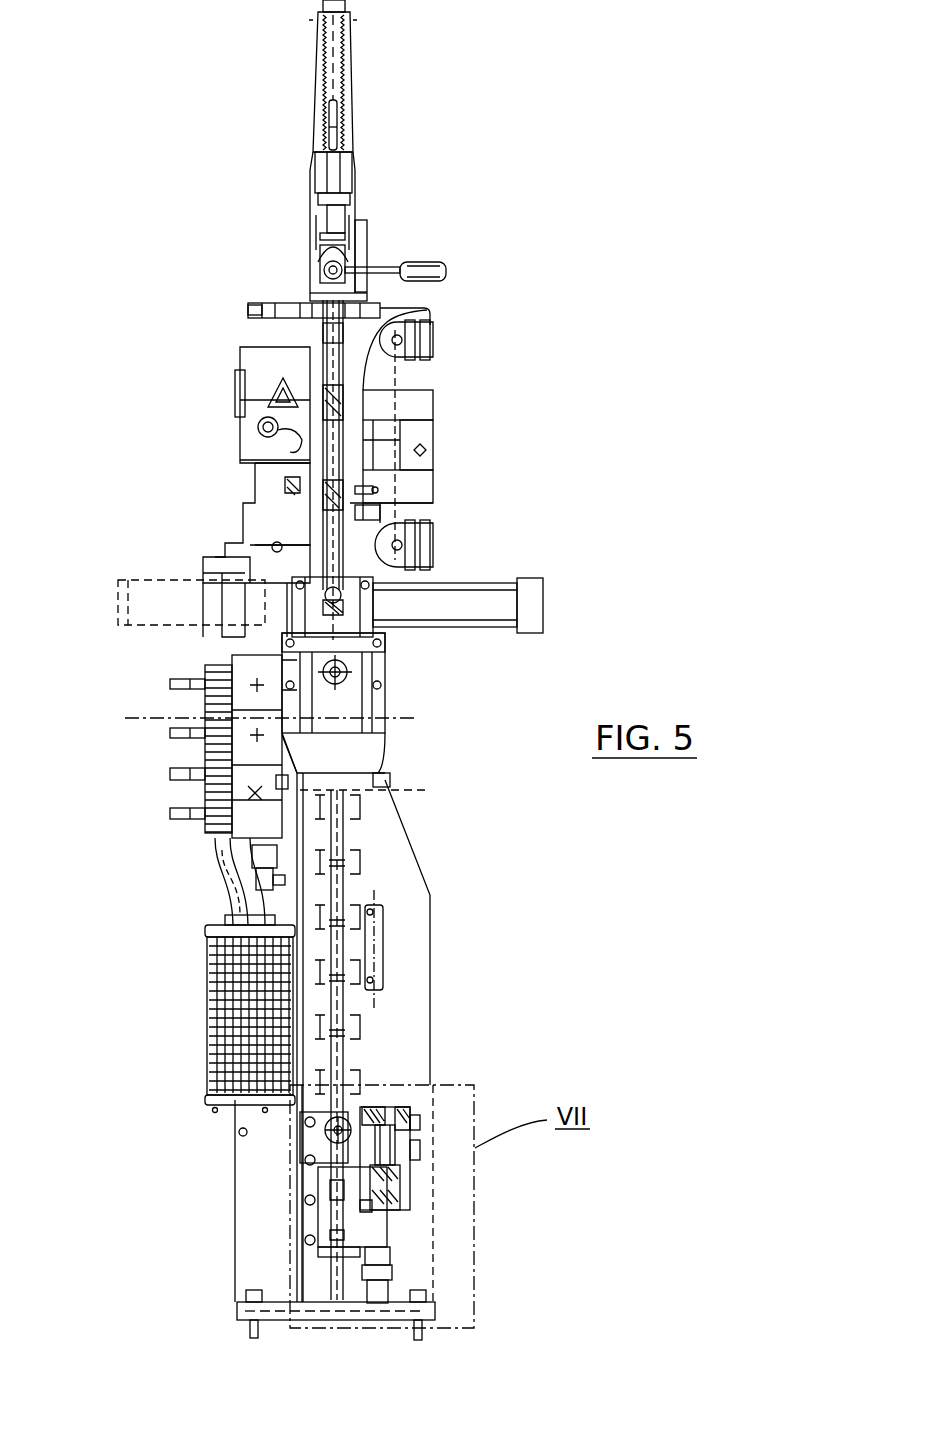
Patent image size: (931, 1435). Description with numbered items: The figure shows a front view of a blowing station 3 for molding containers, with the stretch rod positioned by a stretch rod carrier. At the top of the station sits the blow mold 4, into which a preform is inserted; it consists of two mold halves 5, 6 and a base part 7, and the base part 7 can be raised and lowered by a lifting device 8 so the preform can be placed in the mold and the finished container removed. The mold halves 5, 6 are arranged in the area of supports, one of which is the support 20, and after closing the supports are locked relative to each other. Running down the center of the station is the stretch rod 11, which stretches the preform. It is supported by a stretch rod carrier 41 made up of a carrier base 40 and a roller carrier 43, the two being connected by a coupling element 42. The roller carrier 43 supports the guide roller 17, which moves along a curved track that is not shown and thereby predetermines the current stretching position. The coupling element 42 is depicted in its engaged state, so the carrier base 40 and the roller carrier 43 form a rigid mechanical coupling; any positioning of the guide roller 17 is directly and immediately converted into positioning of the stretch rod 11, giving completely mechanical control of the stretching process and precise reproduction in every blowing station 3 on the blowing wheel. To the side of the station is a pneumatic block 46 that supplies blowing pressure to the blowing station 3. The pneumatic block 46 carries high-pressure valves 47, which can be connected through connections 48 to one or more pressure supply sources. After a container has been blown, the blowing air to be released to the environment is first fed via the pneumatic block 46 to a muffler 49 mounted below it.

The blowing station 3 is at (570, 517).
The blow mold 4 is at (447, 390).
The mold half 5 is at (230, 445).
The mold half 6 is at (462, 465).
The base part 7 is at (277, 270).
The lifting device 8 is at (352, 170).
The stretch rod 11 is at (342, 893).
The guide roller 17 is at (303, 1158).
The support 20 is at (372, 490).
The carrier base 40 is at (300, 1215).
The stretch rod carrier 41 is at (283, 1187).
The coupling element 42 is at (420, 1190).
The roller carrier 43 is at (303, 1140).
The pneumatic block 46 is at (232, 655).
The high-pressure valves 47 is at (205, 835).
The connections 48 is at (170, 815).
The muffler 49 is at (207, 1002).